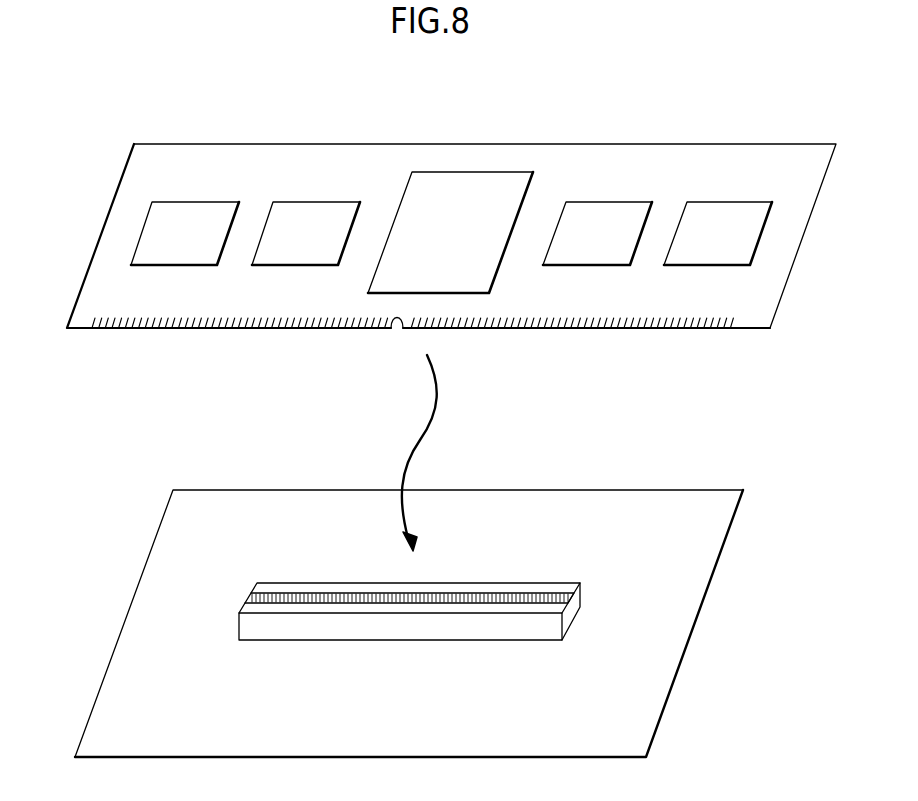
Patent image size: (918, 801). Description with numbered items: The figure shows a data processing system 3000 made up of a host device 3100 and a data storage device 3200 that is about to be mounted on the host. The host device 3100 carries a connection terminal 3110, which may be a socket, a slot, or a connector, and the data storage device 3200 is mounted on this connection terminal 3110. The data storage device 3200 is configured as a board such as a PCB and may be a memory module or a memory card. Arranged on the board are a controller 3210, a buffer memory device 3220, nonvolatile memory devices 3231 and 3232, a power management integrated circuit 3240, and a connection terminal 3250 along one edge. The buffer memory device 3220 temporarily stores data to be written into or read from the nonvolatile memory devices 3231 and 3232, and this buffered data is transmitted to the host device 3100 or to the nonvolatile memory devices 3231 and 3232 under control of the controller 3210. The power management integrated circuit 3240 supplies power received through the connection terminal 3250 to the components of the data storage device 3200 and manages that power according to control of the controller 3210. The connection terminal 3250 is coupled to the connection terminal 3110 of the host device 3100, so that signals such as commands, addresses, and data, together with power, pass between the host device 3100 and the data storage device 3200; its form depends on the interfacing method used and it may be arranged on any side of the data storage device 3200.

The data processing system 3000 is at (108, 102).
The data storage device 3200 is at (451, 261).
The power management integrated circuit 3240 is at (185, 233).
The buffer memory device 3220 is at (306, 233).
The controller 3210 is at (450, 232).
The nonvolatile memory device 3231 is at (597, 233).
The nonvolatile memory device 3232 is at (718, 233).
The connection terminal 3250 is at (113, 331).
The connection terminal 3110 is at (582, 592).
The host device 3100 is at (409, 623).